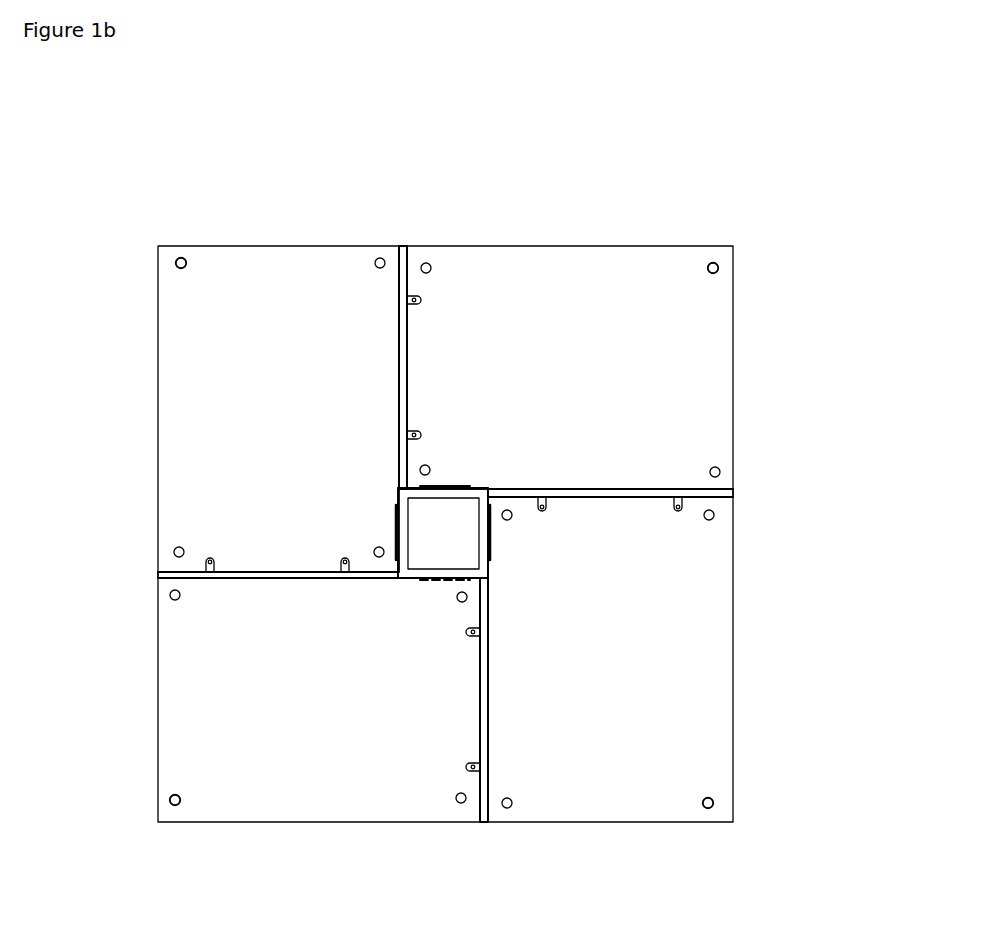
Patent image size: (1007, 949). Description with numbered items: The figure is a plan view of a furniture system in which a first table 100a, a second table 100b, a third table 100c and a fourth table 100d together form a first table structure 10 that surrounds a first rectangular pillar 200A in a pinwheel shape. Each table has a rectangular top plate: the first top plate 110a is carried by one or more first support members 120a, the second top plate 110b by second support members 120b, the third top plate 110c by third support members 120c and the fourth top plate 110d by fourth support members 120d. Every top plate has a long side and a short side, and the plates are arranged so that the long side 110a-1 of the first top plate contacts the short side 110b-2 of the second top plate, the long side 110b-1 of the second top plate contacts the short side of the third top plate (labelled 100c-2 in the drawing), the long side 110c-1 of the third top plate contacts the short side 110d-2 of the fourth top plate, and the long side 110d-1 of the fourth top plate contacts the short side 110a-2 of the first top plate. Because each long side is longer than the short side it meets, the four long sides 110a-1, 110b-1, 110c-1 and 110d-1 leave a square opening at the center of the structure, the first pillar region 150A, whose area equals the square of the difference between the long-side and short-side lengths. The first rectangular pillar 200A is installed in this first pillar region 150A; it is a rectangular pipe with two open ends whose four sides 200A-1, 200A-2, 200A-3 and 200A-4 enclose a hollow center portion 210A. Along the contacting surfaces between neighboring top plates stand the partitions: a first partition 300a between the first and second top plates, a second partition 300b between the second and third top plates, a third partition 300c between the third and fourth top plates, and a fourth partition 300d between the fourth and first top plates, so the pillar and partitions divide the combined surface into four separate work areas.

The first table structure 10 is at (496, 186).
The first table 100a is at (222, 848).
The second table 100b is at (133, 433).
The third table 100c is at (754, 384).
The fourth table 100d is at (766, 709).
The first top plate 110a is at (358, 765).
The second top plate 110b is at (255, 272).
The third top plate 110c is at (582, 282).
The fourth top plate 110d is at (608, 782).
The long side of first top plate 110a-1 is at (268, 580).
The short side of first top plate 110a-2 is at (480, 660).
The long side of second top plate 110b-1 is at (399, 390).
The short side of second top plate 110b-2 is at (237, 561).
The long side of third top plate 110c-1 is at (612, 489).
The long side of fourth top plate 110d-1 is at (490, 700).
The short side of fourth top plate 110d-2 is at (637, 497).
The third panel side edge 100c-2 is at (408, 370).
The first support member 120a is at (170, 800).
The second support member 120b is at (178, 264).
The third support member 120c is at (719, 268).
The fourth support member 120d is at (720, 803).
The first partition 300a is at (160, 575).
The second partition 300b is at (405, 246).
The third partition 300c is at (735, 492).
The fourth partition 300d is at (483, 825).
The first rectangular pillar 200A is at (386, 524).
The side of first rectangular pillar 200A-1 is at (398, 492).
The side of first rectangular pillar 200A-2 is at (480, 488).
The side of first rectangular pillar 200A-3 is at (488, 572).
The side of first rectangular pillar 200A-4 is at (405, 578).
The hollow center portion 210A is at (447, 537).
The first pillar region 150A is at (422, 551).